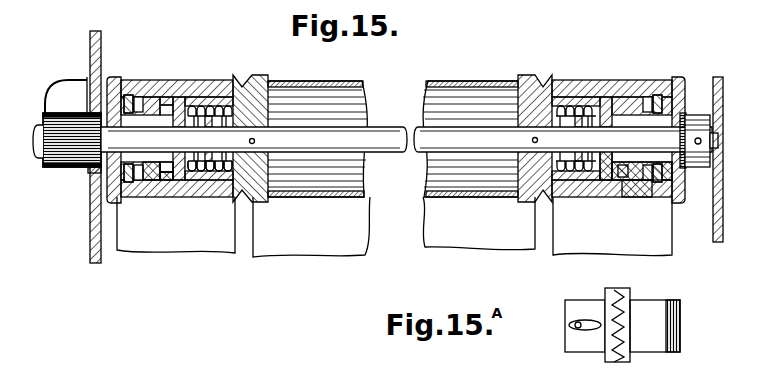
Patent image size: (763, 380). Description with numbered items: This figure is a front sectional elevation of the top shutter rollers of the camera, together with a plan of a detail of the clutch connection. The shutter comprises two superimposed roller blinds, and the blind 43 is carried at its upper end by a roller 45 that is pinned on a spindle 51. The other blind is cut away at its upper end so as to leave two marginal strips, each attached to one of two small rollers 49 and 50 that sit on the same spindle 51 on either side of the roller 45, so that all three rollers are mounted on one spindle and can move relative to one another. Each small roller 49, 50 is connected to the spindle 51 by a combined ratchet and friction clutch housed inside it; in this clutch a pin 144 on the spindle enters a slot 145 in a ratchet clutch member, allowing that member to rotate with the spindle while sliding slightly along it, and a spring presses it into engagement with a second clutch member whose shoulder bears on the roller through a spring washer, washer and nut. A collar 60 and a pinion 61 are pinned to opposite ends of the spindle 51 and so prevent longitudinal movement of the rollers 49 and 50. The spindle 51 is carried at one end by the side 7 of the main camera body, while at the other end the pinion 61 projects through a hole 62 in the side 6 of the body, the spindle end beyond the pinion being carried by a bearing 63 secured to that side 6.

In FIG. 15, the side of the camera body 6 is at (90, 52).
In FIG. 15, the side of the main camera body 7 is at (722, 113).
In FIG. 15, the roller blind 43 is at (352, 222).
In FIG. 15, the roller 45 is at (358, 107).
In FIG. 15, the small roller 49 is at (195, 88).
In FIG. 15, the small roller 50 is at (589, 107).
In FIG. 15, the spindle 51 is at (385, 135).
In FIG. 15, the collar 60 is at (698, 167).
In FIG. 15, the pinion 61 is at (53, 166).
In FIG. 15, the hole 62 is at (92, 172).
In FIG. 15, the bearing 63 is at (58, 87).
In FIG. 15, the pin 144 is at (578, 107).
In FIG. 15A, the pin 144 is at (570, 325).
In FIG. 15A, the slot 145 is at (593, 328).